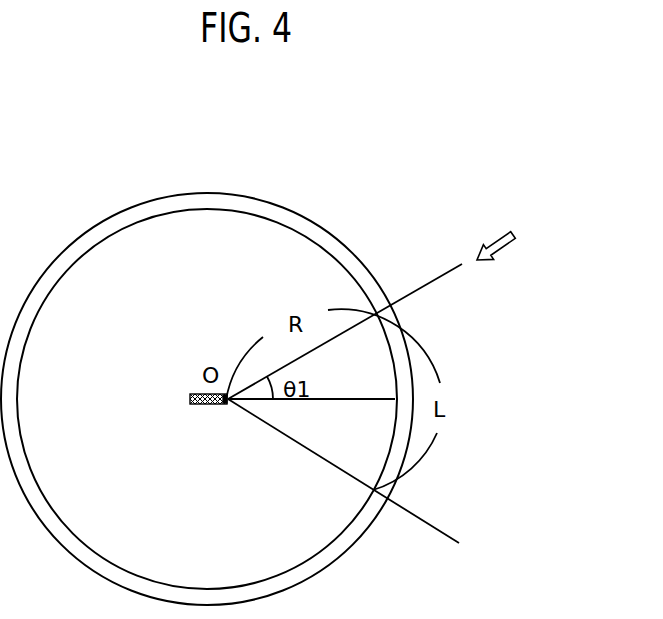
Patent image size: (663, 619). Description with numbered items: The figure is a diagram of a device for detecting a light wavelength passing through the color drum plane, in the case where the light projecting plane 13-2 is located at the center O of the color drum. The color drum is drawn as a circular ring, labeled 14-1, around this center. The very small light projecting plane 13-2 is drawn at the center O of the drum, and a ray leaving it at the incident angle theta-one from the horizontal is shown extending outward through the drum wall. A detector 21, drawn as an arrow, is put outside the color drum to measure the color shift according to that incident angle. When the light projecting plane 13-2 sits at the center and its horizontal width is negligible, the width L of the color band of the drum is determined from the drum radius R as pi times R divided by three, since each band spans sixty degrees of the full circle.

The transparent cylindrical tube 14-1 is at (313, 232).
The light projecting plane 13-2 is at (226, 400).
The detector 21 is at (516, 237).